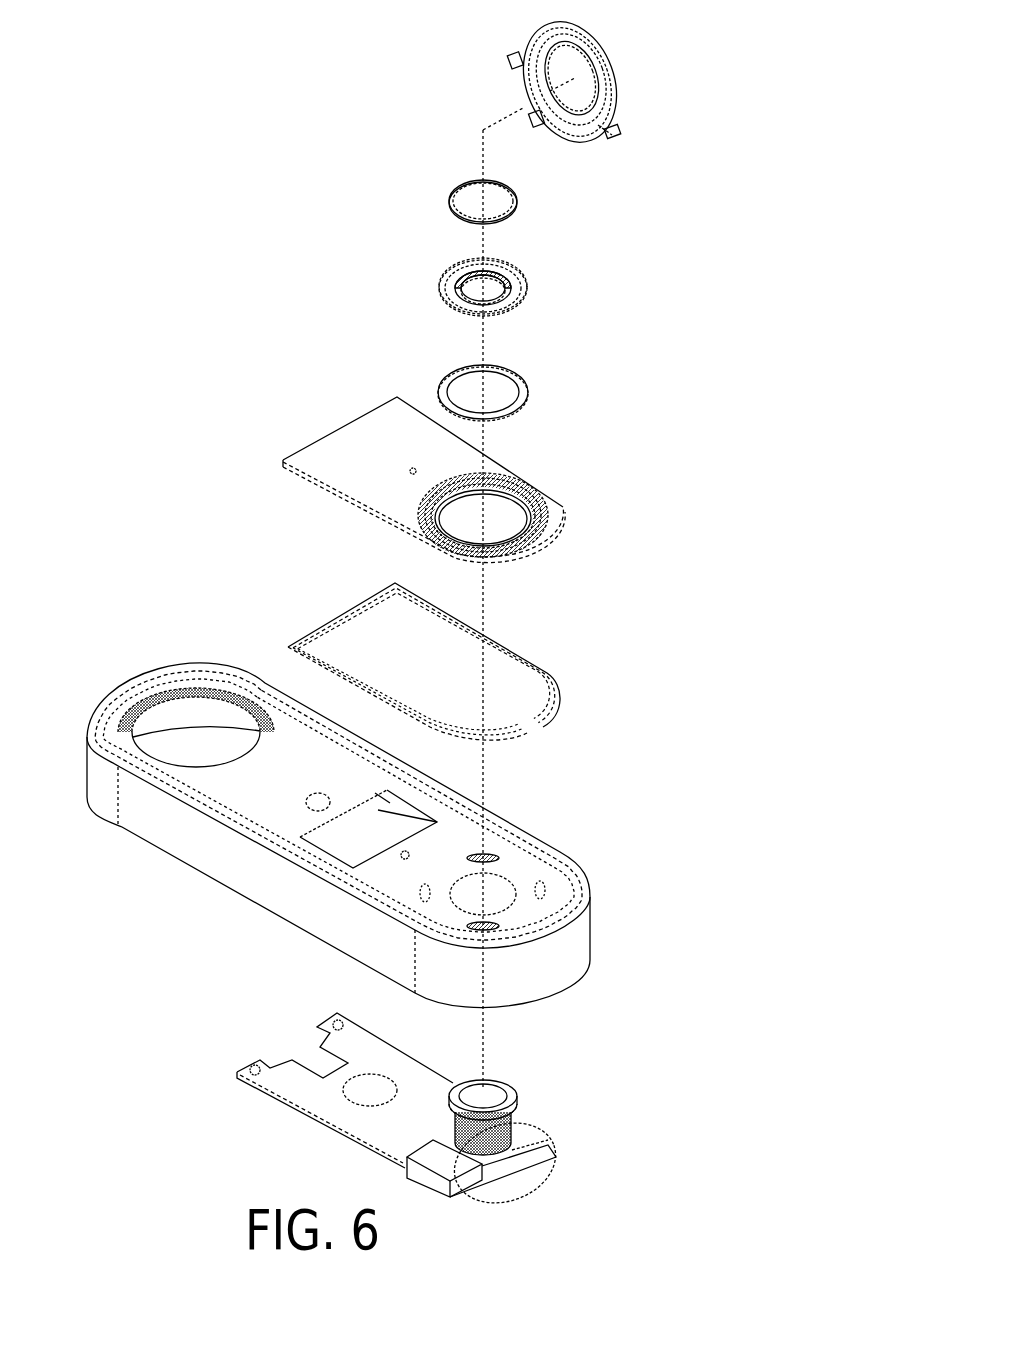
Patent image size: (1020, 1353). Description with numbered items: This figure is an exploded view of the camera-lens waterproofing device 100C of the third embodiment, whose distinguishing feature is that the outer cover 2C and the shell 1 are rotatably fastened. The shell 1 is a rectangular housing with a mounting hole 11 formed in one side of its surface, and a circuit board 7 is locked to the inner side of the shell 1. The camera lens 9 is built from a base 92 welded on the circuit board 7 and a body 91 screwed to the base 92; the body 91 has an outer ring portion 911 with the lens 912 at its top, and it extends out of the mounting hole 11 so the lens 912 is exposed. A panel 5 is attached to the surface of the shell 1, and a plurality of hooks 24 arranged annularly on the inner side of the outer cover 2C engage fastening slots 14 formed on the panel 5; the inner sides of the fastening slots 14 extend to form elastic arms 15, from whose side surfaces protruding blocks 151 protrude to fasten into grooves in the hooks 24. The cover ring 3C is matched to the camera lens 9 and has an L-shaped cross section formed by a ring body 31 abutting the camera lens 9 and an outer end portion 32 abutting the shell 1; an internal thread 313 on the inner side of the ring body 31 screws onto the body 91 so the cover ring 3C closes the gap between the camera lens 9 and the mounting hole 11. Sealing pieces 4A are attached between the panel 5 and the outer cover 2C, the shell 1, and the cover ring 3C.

The camera-lens waterproofing device 100C is at (218, 339).
The outer cover 2C is at (531, 60).
The hooks 24 is at (600, 118).
The sealing pieces 4A is at (455, 196).
The cover ring 3C is at (520, 300).
The ring body 31 is at (583, 228).
The internal thread 313 is at (500, 276).
The outer end portion 32 is at (456, 284).
The panel 5 is at (330, 463).
The fastening slots 14 is at (513, 486).
The protruding blocks 151 is at (547, 512).
The elastic arms 15 is at (544, 520).
The shell 1 is at (192, 852).
The mounting hole 11 is at (515, 880).
The circuit board 7 is at (310, 1097).
The camera lens 9 is at (597, 1043).
The lens 912 is at (486, 1094).
The outer ring portion 911 is at (511, 1103).
The body 91 is at (503, 1131).
The base 92 is at (512, 1142).